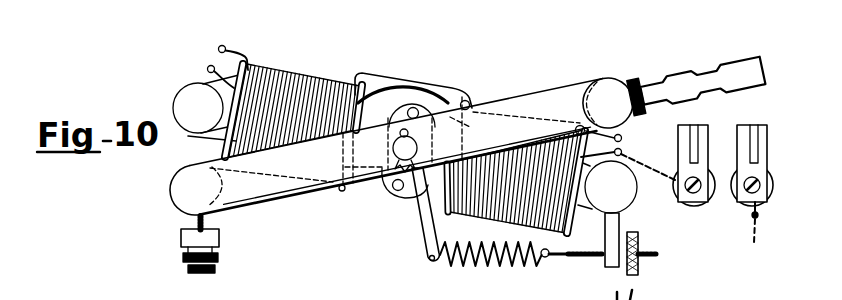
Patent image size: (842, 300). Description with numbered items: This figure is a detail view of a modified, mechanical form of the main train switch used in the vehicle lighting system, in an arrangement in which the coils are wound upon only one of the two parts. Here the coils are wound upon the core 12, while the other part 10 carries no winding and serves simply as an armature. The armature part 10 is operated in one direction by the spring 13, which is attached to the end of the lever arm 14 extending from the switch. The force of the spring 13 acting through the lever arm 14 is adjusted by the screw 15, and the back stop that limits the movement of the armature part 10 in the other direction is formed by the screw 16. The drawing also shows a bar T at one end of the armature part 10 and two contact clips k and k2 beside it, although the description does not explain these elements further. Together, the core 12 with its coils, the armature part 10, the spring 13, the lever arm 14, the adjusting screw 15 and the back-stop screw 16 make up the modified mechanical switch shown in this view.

The part 10 is at (550, 101).
The core 12 is at (373, 117).
The spring 13 is at (506, 264).
The lever arm 14 is at (417, 223).
The screw 15 is at (639, 246).
The screw 16 is at (220, 244).
The handle bar T is at (655, 93).
The contact clip k is at (699, 141).
The second contact clip k2 is at (763, 136).